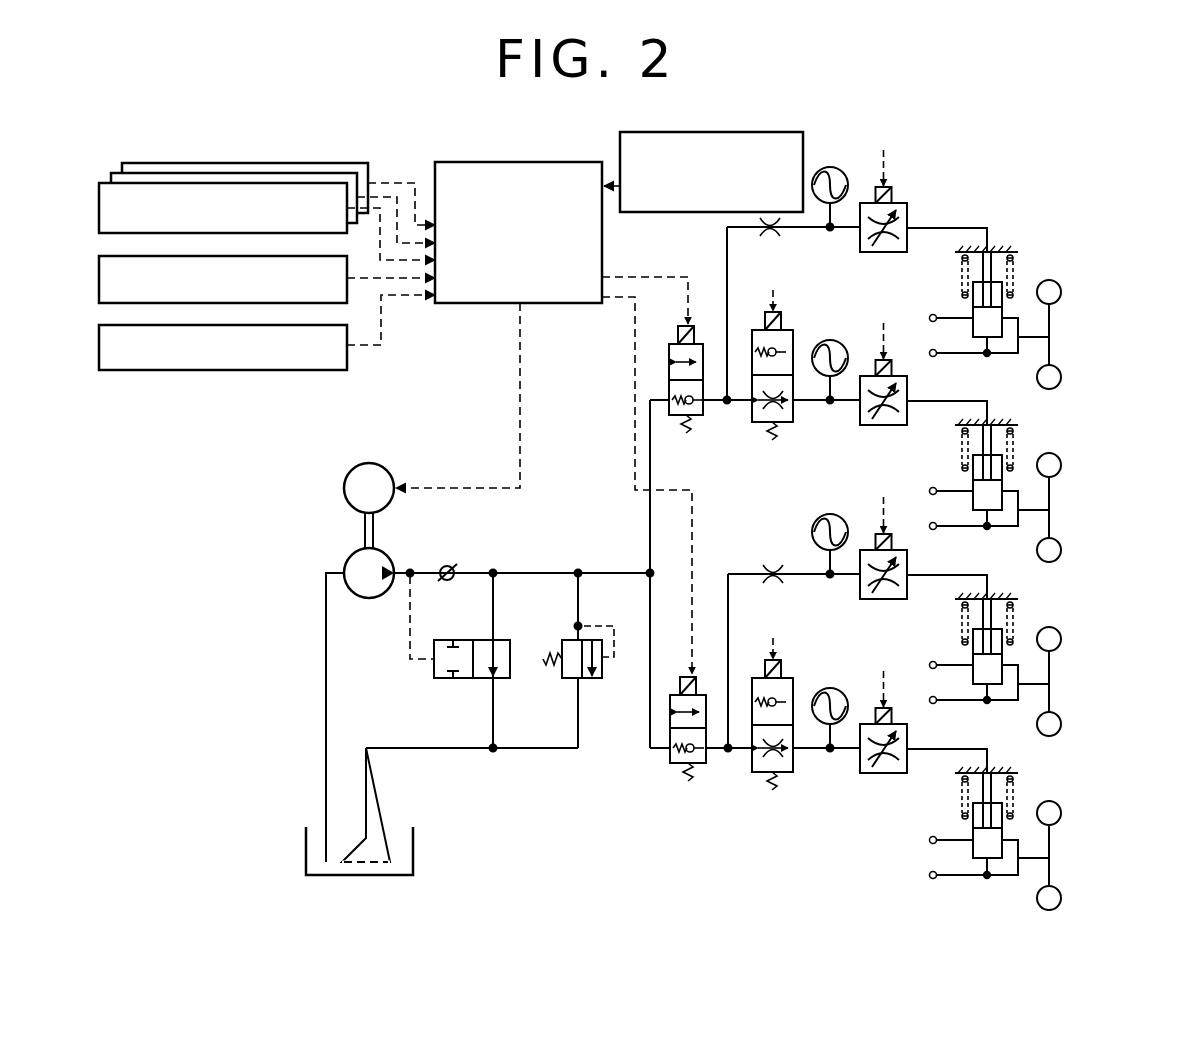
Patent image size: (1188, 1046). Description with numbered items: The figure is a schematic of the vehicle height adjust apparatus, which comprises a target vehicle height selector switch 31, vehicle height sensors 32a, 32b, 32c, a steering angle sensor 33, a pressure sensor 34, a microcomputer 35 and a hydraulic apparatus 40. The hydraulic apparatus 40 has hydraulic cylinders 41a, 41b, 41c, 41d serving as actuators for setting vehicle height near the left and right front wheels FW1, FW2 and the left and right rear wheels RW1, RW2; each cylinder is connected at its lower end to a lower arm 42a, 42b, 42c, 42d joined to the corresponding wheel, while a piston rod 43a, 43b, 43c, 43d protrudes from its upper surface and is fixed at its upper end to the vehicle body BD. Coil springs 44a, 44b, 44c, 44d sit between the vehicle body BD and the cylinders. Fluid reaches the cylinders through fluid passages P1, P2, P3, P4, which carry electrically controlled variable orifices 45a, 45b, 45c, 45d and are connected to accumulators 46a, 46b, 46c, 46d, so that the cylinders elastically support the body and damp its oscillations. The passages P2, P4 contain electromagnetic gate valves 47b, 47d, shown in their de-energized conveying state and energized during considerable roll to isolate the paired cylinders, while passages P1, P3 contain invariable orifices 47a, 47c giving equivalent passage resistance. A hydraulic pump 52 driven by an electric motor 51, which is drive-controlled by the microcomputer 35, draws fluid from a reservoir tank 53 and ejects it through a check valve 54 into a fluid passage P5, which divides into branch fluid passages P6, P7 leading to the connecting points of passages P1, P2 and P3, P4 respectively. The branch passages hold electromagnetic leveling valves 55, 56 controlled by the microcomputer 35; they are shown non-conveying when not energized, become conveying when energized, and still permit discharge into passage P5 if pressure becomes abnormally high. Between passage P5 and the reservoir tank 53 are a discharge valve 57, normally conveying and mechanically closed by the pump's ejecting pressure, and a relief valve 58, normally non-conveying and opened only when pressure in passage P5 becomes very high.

The target vehicle height selector switch 31 is at (725, 132).
The vehicle height sensor 32a is at (172, 183).
The vehicle height sensor 32b is at (256, 174).
The vehicle height sensor 32c is at (345, 164).
The steering angle sensor 33 is at (99, 290).
The pressure sensor 34 is at (99, 336).
The microcomputer 35 is at (548, 162).
The hydraulic apparatus 40 is at (738, 527).
The hydraulic cylinder 41a is at (973, 310).
The hydraulic cylinder 41b is at (973, 482).
The hydraulic cylinder 41c is at (973, 658).
The hydraulic cylinder 41d is at (973, 833).
The lower arm 42a is at (968, 353).
The lower arm 42b is at (968, 526).
The lower arm 42c is at (965, 700).
The lower arm 42d is at (965, 875).
The piston rod 43a is at (992, 268).
The piston rod 43b is at (992, 441).
The piston rod 43c is at (992, 615).
The piston rod 43d is at (992, 790).
The coil spring 44a is at (1014, 290).
The coil spring 44b is at (1014, 462).
The coil spring 44c is at (1014, 640).
The coil spring 44d is at (1014, 810).
The variable orifice 45a is at (907, 216).
The variable orifice 45b is at (907, 399).
The variable orifice 45c is at (907, 573).
The variable orifice 45d is at (907, 749).
The accumulator 46a is at (838, 167).
The accumulator 46b is at (858, 330).
The accumulator 46c is at (840, 514).
The accumulator 46d is at (838, 692).
The invariable orifice 47a is at (768, 237).
The gate valve 47b is at (793, 330).
The invariable orifice 47c is at (772, 583).
The gate valve 47d is at (793, 678).
The electric motor 51 is at (354, 465).
The hydraulic pump 52 is at (348, 553).
The reservoir tank 53 is at (413, 852).
The check valve 54 is at (446, 583).
The leveling valve 55 is at (669, 358).
The leveling valve 56 is at (670, 722).
The discharge valve 57 is at (510, 662).
The relief valve 58 is at (602, 664).
The fluid passage P1 is at (821, 231).
The fluid passage P2 is at (815, 405).
The fluid passage P3 is at (807, 572).
The fluid passage P4 is at (815, 752).
The fluid passage P5 is at (537, 576).
The branch fluid passage P6 is at (718, 404).
The branch fluid passage P7 is at (718, 752).
The front wheel FW1 is at (1060, 370).
The front wheel FW2 is at (1061, 545).
The rear wheel RW1 is at (1060, 722).
The rear wheel RW2 is at (1060, 898).
The vehicle body BD is at (957, 252).